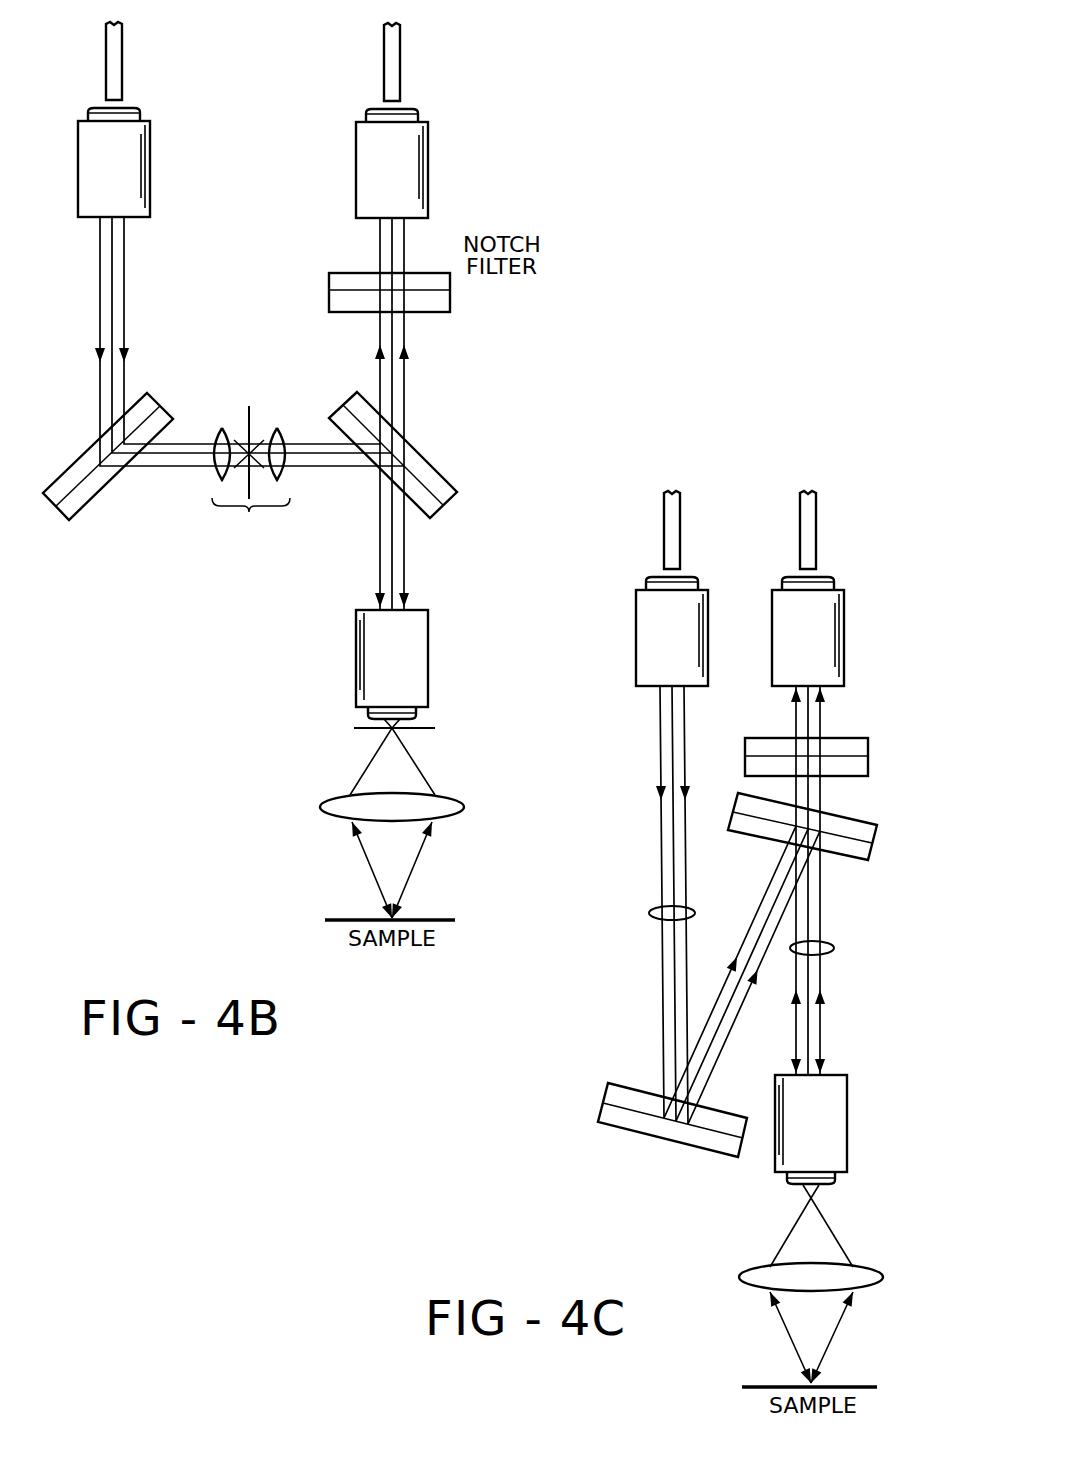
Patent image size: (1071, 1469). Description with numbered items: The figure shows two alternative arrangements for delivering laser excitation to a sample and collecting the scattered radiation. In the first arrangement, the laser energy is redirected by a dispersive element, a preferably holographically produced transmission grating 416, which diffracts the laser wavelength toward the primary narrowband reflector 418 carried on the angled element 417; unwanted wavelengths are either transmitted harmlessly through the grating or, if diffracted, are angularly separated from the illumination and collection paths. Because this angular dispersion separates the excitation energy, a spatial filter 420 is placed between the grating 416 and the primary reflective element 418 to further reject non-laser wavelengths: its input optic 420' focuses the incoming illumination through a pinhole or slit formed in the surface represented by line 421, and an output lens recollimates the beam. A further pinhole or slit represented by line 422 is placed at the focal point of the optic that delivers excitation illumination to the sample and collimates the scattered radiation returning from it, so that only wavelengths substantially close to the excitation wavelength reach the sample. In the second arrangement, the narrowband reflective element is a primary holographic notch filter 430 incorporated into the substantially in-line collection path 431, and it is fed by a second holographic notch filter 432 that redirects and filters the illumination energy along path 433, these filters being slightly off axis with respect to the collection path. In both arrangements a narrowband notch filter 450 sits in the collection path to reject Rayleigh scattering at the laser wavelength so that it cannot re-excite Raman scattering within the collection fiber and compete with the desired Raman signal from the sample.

In FIG. 4B, the transmission grating 416 is at (88, 503).
In FIG. 4B, the dichroic beam splitter mirror 417 is at (427, 520).
In FIG. 4B, the primary narrowband reflector 418 is at (442, 522).
In FIG. 4B, the spatial filter 420 is at (245, 412).
In FIG. 4B, the input optic 420' is at (199, 404).
In FIG. 4B, the pinhole or slit surface 421 is at (249, 420).
In FIG. 4B, the pinhole or slit 422 is at (362, 728).
In FIG. 4C, the primary holographic notch filter 430 is at (878, 836).
In FIG. 4C, the in-line collection path 431 is at (835, 948).
In FIG. 4C, the second holographic notch filter 432 is at (603, 1102).
In FIG. 4C, the illumination path 433 is at (650, 913).
In FIG. 4C, the narrowband notch filter 450 is at (857, 738).